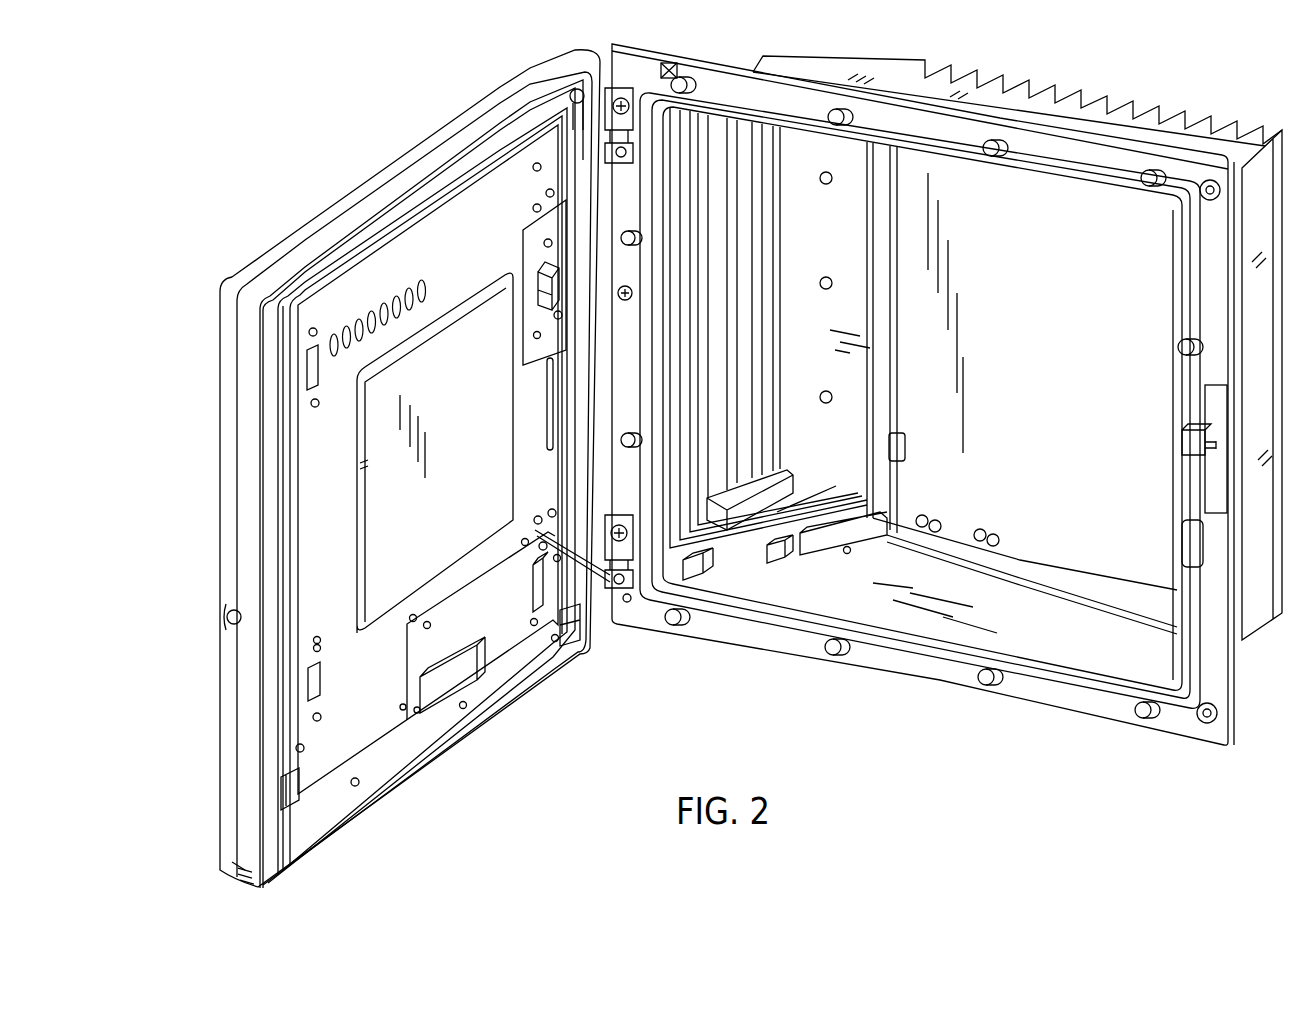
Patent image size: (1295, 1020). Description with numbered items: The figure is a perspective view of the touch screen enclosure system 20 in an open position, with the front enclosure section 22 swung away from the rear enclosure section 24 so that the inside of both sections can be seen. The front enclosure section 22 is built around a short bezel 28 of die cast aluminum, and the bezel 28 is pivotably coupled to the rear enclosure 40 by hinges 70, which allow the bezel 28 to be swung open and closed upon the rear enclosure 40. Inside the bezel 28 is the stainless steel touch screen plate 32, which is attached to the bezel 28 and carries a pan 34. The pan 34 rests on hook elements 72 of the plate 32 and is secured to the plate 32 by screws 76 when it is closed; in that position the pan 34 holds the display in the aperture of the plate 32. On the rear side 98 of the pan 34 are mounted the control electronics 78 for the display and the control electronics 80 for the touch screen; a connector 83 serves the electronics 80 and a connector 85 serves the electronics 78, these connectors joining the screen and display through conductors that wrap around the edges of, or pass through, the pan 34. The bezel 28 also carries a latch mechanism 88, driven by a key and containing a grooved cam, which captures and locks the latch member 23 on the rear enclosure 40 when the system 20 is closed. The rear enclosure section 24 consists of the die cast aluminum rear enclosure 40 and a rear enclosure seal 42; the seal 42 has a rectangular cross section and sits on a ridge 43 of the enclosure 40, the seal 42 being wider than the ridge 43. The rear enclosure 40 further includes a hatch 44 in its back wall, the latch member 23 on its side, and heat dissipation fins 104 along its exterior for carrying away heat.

The touch screen enclosure system 20 is at (434, 72).
The front enclosure section 22 is at (170, 328).
The latch member 23 is at (1186, 445).
The rear enclosure section 24 is at (1006, 52).
The short bezel 28 is at (245, 864).
The touch screen plate 32 is at (420, 194).
The pan 34 is at (360, 741).
The rear enclosure 40 is at (986, 700).
The rear enclosure seal 42 is at (882, 628).
The ridge 43 is at (930, 655).
The hatch 44 is at (838, 263).
The hinges 70 is at (627, 122).
The hook elements 72 is at (298, 806).
The screws 76 is at (312, 328).
The control electronics 78 is at (522, 238).
The control electronics 80 is at (407, 640).
The connector 83 is at (470, 688).
The connector 85 is at (540, 293).
The latch mechanism 88 is at (226, 620).
The rear side 98 is at (320, 612).
The heat dissipation fins 104 is at (1150, 108).